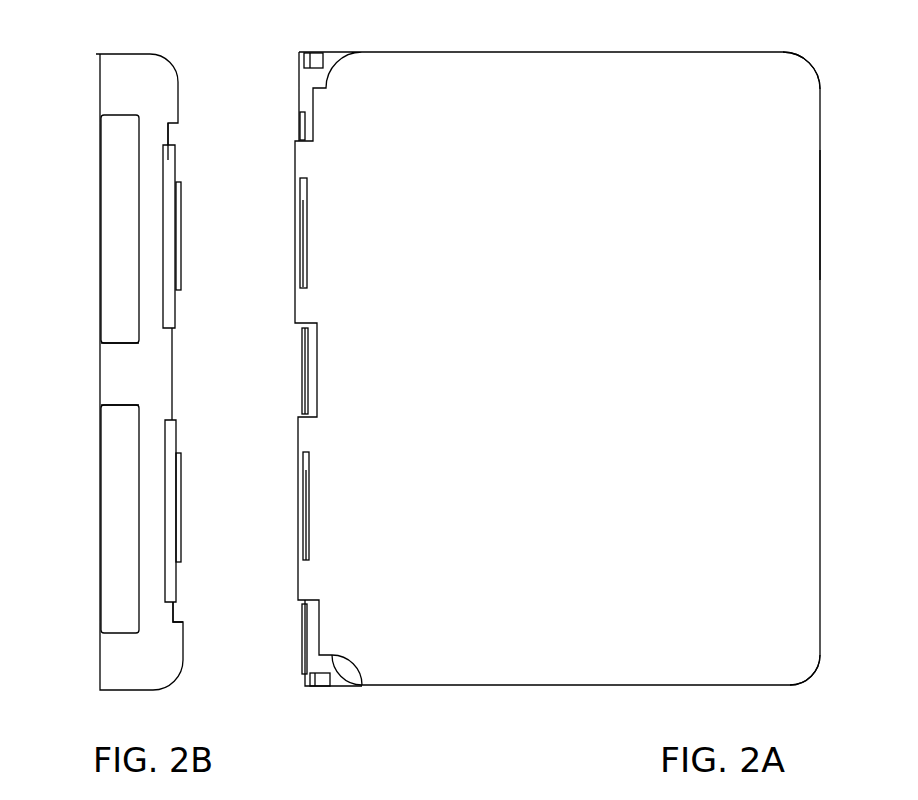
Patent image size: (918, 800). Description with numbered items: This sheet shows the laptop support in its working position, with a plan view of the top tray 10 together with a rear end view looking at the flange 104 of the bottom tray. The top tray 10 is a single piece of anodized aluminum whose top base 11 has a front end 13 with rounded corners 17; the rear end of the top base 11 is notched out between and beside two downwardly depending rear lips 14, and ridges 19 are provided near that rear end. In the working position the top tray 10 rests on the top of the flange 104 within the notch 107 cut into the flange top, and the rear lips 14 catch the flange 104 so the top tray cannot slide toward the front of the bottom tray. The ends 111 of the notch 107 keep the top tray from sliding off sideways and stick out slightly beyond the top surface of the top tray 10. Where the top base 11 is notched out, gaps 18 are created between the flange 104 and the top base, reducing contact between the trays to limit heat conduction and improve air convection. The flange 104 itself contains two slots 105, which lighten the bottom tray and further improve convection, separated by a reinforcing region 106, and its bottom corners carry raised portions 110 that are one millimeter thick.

In FIG. 2A, the top tray 10 is at (783, 142).
In FIG. 2A, the top base 11 is at (580, 381).
In FIG. 2A, the front end 13 is at (822, 213).
In FIG. 2B, the rear lips 14 is at (167, 158).
In FIG. 2A, the rear lips 14 is at (298, 218).
In FIG. 2A, the corners 17 is at (806, 56).
In FIG. 2A, the gaps 18 is at (305, 103).
In FIG. 2B, the ridges 19 is at (180, 278).
In FIG. 2A, the ridges 19 is at (303, 279).
In FIG. 2B, the flange 104 is at (148, 77).
In FIG. 2B, the slots 105 is at (113, 215).
In FIG. 2B, the reinforcing region 106 is at (115, 380).
In FIG. 2B, the notch 107 is at (177, 363).
In FIG. 2A, the raised portions 110 is at (313, 58).
In FIG. 2B, the ends 111 is at (177, 125).